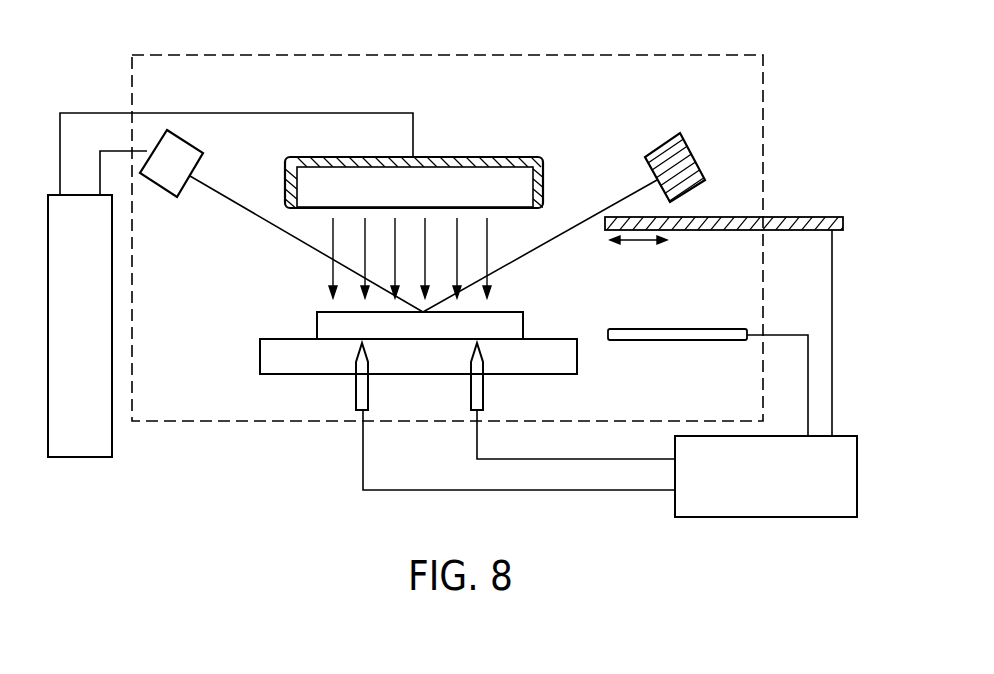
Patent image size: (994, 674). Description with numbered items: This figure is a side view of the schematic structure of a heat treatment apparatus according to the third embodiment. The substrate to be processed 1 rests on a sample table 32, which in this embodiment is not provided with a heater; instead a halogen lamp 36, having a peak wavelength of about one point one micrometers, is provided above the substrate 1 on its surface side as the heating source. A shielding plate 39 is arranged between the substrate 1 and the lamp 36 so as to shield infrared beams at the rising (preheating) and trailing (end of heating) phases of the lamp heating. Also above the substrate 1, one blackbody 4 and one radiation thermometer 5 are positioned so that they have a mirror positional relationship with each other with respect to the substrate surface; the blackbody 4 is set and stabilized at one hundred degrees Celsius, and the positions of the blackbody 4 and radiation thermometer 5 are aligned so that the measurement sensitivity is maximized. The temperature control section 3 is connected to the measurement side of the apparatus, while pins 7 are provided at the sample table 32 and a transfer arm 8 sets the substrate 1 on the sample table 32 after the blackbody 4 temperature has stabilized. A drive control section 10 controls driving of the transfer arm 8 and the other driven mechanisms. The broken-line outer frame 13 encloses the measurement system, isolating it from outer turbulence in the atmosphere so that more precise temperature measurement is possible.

The substrate to be processed 1 is at (523, 328).
The temperature control section 3 is at (78, 457).
The blackbody 4 is at (690, 147).
The radiation thermometer 5 is at (193, 142).
The pins 7 is at (356, 390).
The transfer arm 8 is at (650, 329).
The drive control section 10 is at (765, 517).
The outer frame 13 is at (215, 55).
The sample table 32 is at (577, 360).
The halogen lamp 36 is at (505, 155).
The shielding plate 39 is at (720, 230).